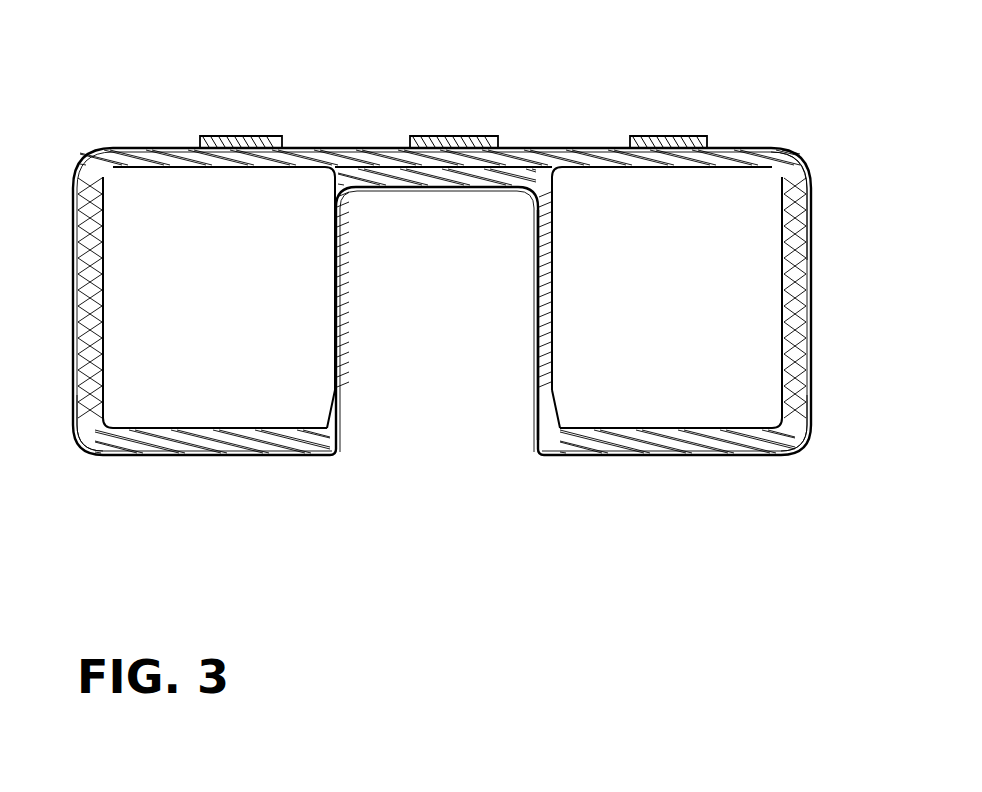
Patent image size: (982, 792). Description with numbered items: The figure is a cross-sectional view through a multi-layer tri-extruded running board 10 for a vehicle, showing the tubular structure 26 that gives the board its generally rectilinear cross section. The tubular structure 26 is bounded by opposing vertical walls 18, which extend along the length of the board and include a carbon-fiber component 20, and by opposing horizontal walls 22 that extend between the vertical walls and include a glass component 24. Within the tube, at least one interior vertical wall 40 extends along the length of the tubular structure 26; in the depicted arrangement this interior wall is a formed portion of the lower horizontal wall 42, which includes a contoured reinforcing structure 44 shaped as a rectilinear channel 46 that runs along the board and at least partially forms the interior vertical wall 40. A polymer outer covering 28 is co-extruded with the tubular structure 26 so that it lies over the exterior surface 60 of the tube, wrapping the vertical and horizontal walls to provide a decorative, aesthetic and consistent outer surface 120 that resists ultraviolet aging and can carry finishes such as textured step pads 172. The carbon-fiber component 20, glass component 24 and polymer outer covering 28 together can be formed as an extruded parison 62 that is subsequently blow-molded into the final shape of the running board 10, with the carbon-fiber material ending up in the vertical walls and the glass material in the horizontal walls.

The running board 10 is at (148, 86).
The outer surface 120 is at (140, 146).
The step pad 172 is at (245, 147).
The opposing horizontal walls 22 is at (317, 146).
The glass component 24 is at (525, 163).
The parison 62 is at (813, 176).
The opposing vertical walls 18 is at (76, 255).
The interior vertical wall 40 is at (331, 337).
The rectilinear channel 46 is at (548, 278).
The tubular structure 26 is at (696, 418).
The contoured reinforcing structure 44 is at (530, 394).
The lower horizontal wall 42 is at (638, 440).
The carbon-fiber component 20 is at (92, 386).
The polymer outer covering 28 is at (240, 456).
The exterior surface 60 is at (746, 440).